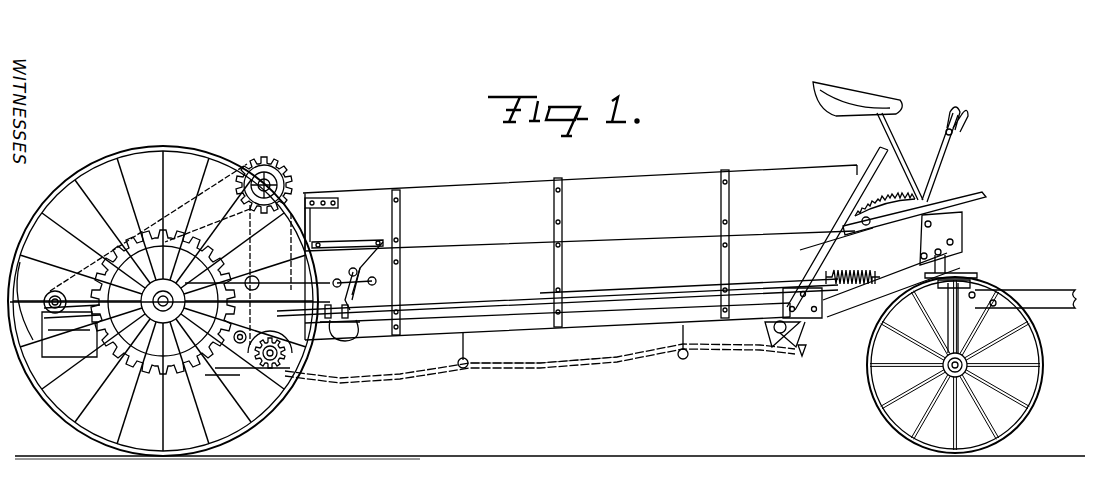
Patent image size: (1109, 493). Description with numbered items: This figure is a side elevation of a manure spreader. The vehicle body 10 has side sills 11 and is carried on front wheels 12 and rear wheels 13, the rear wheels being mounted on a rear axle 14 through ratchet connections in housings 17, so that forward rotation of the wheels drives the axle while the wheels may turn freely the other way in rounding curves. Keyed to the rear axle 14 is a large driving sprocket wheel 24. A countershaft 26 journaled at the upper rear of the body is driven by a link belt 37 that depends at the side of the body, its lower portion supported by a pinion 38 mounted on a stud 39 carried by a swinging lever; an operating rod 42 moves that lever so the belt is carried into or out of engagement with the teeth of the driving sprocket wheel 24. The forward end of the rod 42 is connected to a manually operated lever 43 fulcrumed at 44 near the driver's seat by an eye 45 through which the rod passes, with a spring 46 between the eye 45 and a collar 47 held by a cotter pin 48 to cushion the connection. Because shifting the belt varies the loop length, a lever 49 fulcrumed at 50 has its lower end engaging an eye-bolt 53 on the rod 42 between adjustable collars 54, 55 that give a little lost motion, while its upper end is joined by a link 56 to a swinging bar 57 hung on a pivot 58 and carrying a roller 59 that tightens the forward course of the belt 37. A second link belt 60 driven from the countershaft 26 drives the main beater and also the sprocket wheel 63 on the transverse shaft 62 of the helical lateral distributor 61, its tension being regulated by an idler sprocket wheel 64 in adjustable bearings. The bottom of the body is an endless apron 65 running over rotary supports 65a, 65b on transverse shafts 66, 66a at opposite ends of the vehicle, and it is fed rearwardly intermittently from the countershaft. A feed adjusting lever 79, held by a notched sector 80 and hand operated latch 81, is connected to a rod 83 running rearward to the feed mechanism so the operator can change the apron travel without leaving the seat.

The vehicle body 10 is at (432, 183).
The side sills 11 is at (595, 327).
The front wheels 12 is at (872, 396).
The rear wheels 13 is at (250, 428).
The rear axle 14 is at (140, 325).
The housings 17 is at (163, 326).
The driving sprocket wheel 24 is at (142, 376).
The countershaft 26 is at (288, 178).
The link belt 37 is at (247, 283).
The pinion 38 is at (330, 380).
The stud 39 is at (290, 368).
The operating rod 42 is at (468, 307).
The manually operated lever 43 is at (946, 201).
The fulcrum 44 is at (862, 218).
The eye 45 is at (838, 313).
The spring 46 is at (848, 292).
The collar 47 is at (870, 285).
The cotter pin 48 is at (874, 277).
The lever 49 is at (378, 261).
The fulcrum 50 is at (378, 275).
The eye-bolt 53 is at (356, 294).
The adjustable collar 54 is at (335, 322).
The adjustable collar 55 is at (360, 340).
The link 56 is at (347, 233).
The swinging bar 57 is at (313, 225).
The pivot 58 is at (318, 198).
The roller 59 is at (286, 286).
The link belt 60 is at (140, 240).
The lateral distributor 61 is at (85, 270).
The transverse shaft 62 is at (48, 296).
The sprocket wheel 63 is at (66, 303).
The idler sprocket wheel 64 is at (75, 357).
The endless apron 65 is at (522, 367).
The rotary support 65a is at (802, 352).
The rotary support 65b is at (215, 376).
The transverse shaft 66 is at (777, 338).
The transverse shaft 66a is at (243, 345).
The feed adjusting lever 79 is at (944, 118).
The notched sector 80 is at (893, 205).
The hand operated latch 81 is at (963, 138).
The rod 83 is at (846, 237).